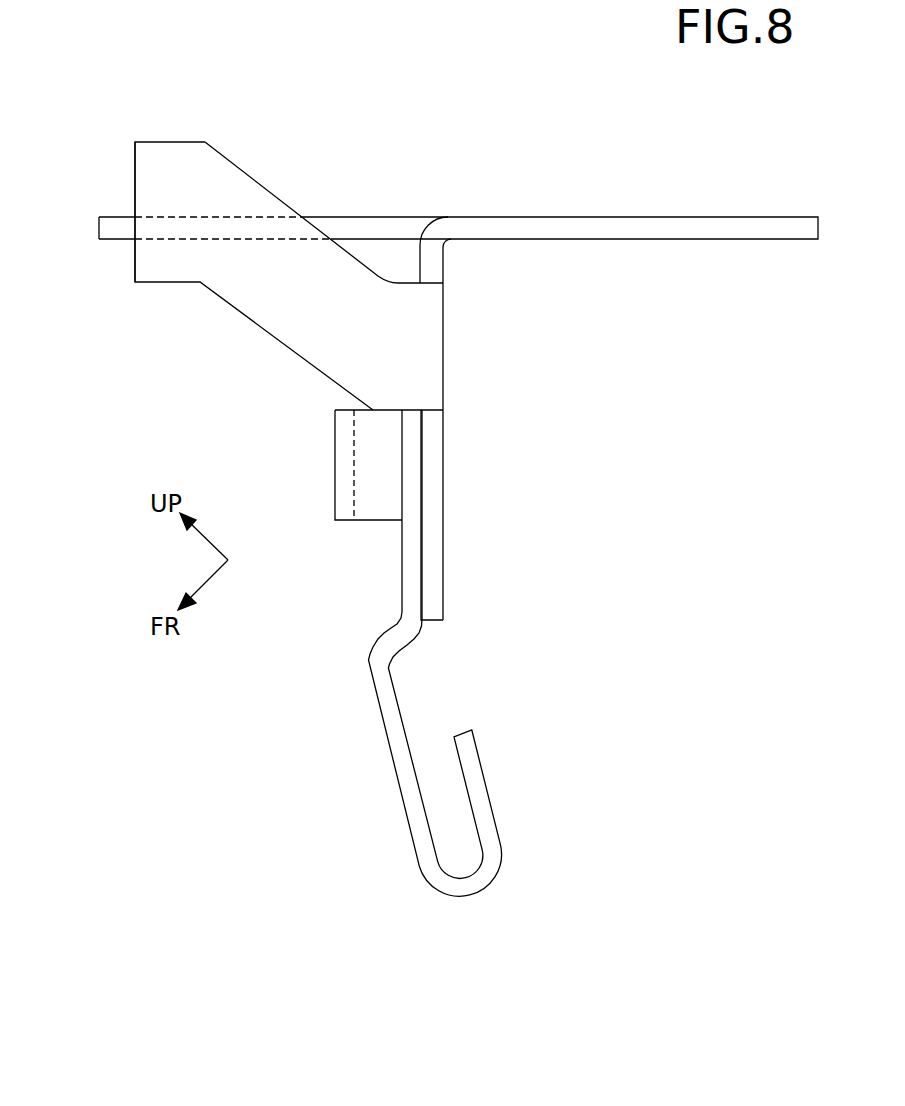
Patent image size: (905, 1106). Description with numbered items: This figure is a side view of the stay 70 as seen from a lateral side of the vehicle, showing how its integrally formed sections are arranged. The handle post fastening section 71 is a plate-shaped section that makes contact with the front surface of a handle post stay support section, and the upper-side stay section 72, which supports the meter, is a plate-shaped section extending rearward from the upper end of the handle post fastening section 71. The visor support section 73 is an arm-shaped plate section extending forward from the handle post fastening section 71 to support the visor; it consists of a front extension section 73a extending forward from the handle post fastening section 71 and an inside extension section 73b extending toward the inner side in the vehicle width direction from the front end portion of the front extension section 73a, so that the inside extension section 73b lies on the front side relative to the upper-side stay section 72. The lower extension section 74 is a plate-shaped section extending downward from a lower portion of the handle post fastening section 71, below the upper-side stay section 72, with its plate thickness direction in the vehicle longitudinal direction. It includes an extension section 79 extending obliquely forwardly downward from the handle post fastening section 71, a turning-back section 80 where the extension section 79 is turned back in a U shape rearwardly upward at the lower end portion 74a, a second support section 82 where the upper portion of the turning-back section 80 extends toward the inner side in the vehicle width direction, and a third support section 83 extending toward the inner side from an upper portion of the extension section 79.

The stay 70 is at (466, 79).
The handle post fastening section 71 is at (445, 348).
The upper-side stay section 72 is at (511, 216).
The visor support section 73 is at (180, 142).
The front extension section 73a is at (287, 318).
The inside extension section 73b is at (134, 180).
The lower extension section 74 is at (387, 747).
The lower end portion 74a is at (457, 898).
The extension section 79 is at (402, 578).
The turning-back section 80 is at (500, 828).
The second support section 82 is at (466, 728).
The third support section 83 is at (335, 490).